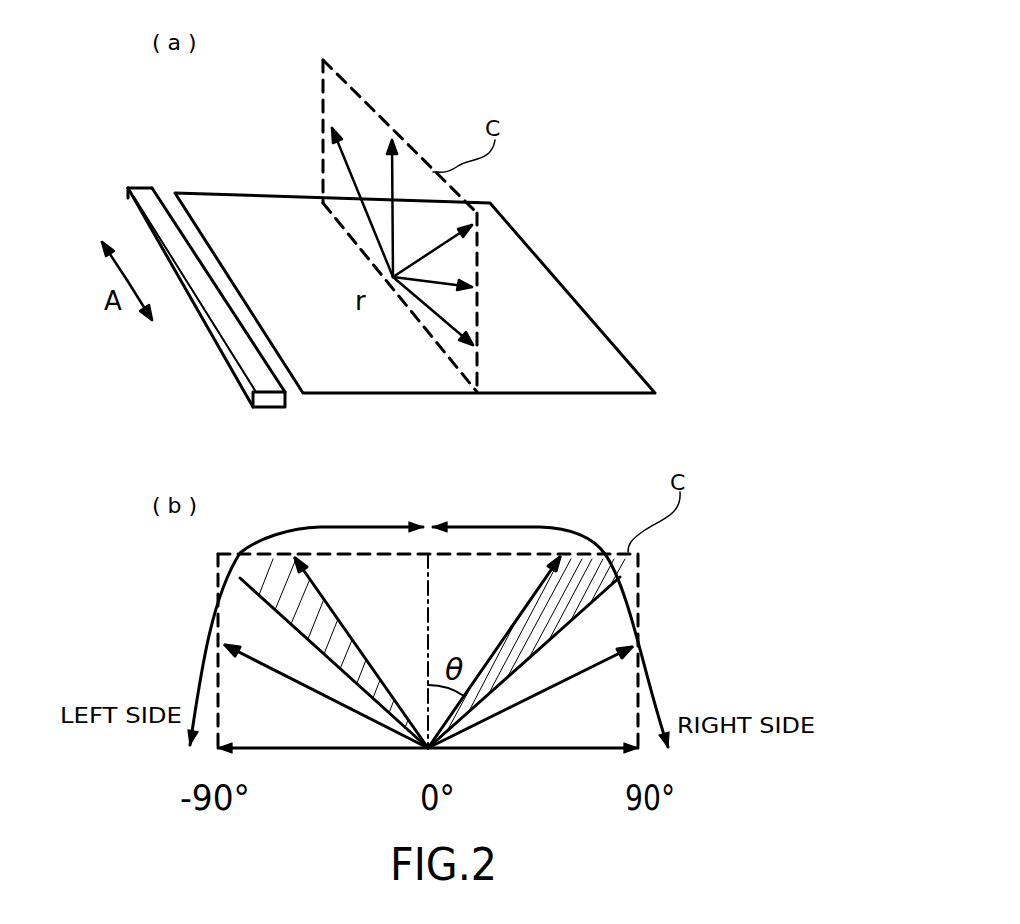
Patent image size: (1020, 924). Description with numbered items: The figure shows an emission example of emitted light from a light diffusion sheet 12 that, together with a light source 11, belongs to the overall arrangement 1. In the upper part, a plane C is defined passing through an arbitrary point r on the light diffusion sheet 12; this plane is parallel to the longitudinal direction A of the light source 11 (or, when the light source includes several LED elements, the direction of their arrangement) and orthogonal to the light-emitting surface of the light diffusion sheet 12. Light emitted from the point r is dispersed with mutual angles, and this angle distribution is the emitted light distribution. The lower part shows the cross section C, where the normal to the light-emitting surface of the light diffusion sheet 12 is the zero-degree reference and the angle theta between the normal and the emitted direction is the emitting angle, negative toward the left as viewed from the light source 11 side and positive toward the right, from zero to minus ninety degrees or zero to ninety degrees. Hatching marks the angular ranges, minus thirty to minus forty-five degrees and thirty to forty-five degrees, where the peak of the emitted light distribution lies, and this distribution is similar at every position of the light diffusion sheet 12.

The light source device 1 is at (395, 277).
The light source 11 is at (218, 327).
The light diffusion sheet 12 is at (565, 320).